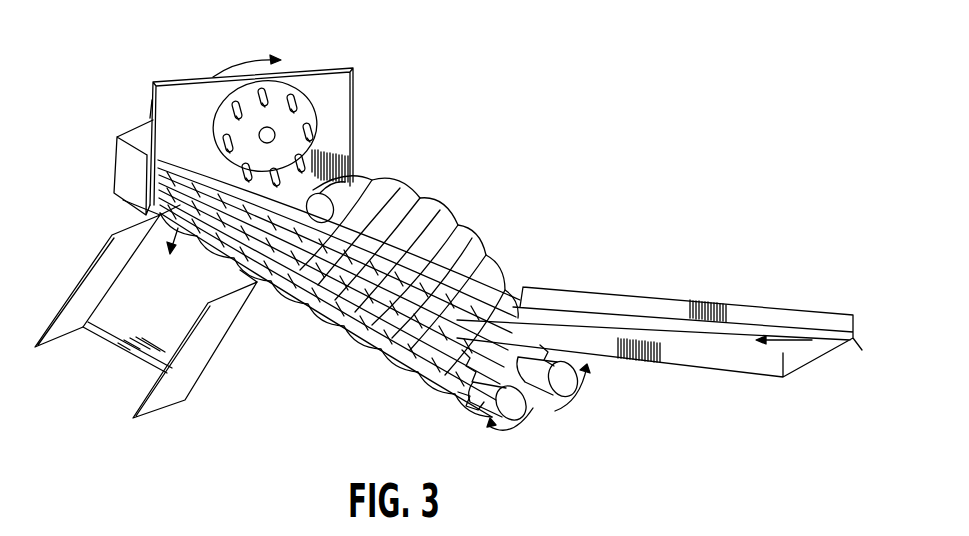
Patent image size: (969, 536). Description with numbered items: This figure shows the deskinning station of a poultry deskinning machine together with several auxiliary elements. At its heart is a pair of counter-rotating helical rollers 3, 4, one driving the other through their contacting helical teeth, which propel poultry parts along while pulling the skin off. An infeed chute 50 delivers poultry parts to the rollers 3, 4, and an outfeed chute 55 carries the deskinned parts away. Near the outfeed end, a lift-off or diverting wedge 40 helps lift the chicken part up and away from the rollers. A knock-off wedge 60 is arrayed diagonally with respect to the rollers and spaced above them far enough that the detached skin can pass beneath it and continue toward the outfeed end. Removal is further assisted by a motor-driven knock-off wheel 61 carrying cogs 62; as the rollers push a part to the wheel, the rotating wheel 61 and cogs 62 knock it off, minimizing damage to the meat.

The helical roller 3 is at (438, 253).
The helical roller 4 is at (372, 345).
The lift-off wedge 40 is at (318, 210).
The infeed chute 50 is at (687, 367).
The outfeed chute 55 is at (213, 350).
The knock-off wedge 60 is at (197, 117).
The knock-off wheel 61 is at (280, 93).
The cogs 62 is at (317, 128).